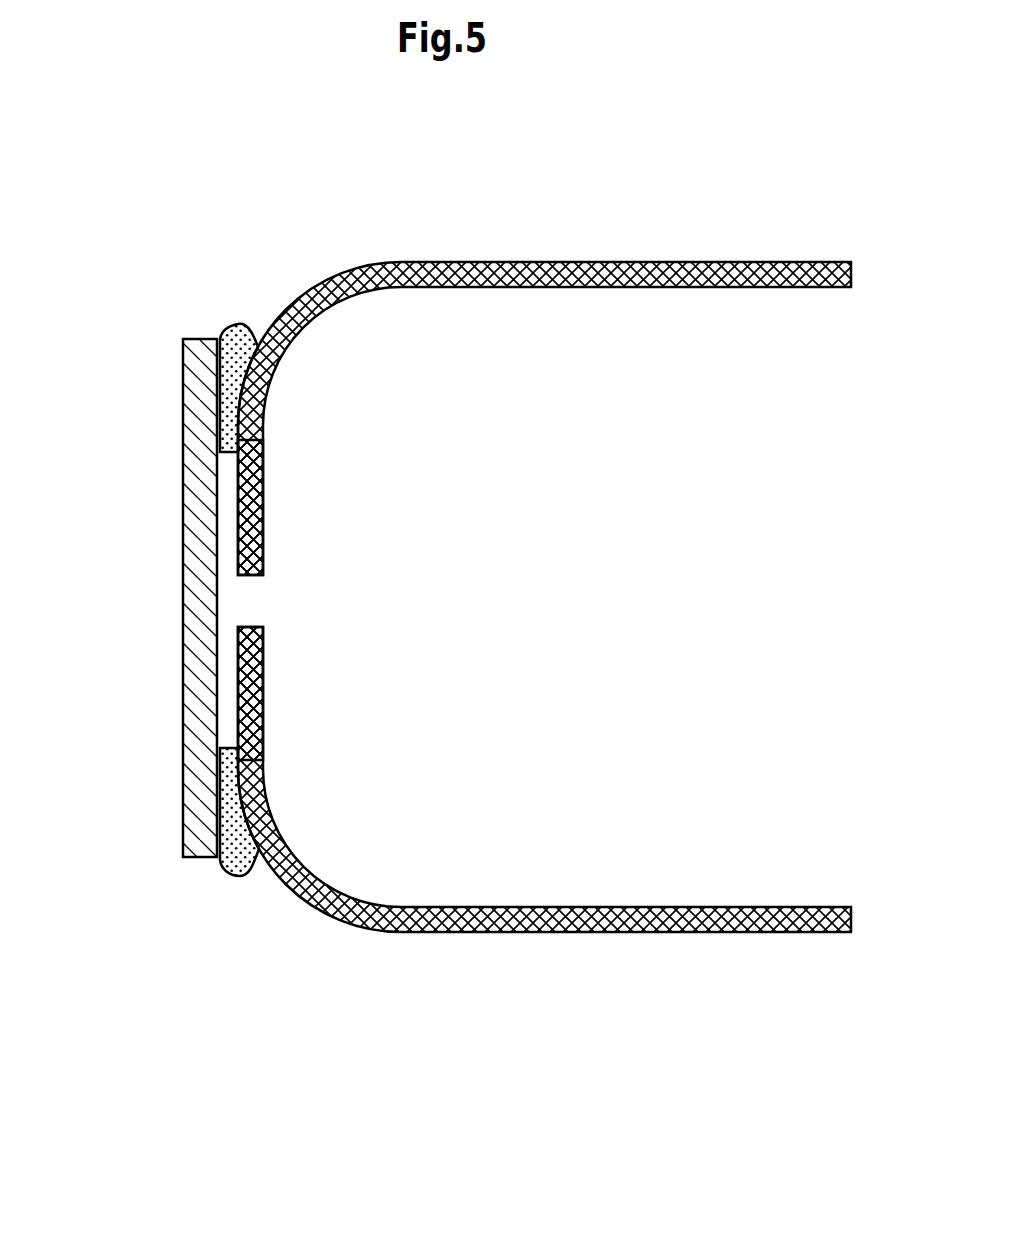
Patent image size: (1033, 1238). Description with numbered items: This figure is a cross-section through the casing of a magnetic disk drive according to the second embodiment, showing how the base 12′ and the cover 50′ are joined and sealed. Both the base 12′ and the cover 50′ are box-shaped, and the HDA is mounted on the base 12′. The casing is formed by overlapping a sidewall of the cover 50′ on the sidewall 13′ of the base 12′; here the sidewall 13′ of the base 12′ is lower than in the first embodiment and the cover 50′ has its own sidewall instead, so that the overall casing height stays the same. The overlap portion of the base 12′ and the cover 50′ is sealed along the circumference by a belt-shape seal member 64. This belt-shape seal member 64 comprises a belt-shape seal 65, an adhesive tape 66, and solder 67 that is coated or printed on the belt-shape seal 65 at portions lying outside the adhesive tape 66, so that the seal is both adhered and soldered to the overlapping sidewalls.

The cover 50′ is at (743, 262).
The base 12′ is at (685, 933).
The sidewall of the base 13′ is at (264, 706).
The belt-shape seal member 64 is at (216, 602).
The belt-shape seal 65 is at (183, 378).
The adhesive tape 66 is at (226, 603).
The solder 67 is at (236, 326).